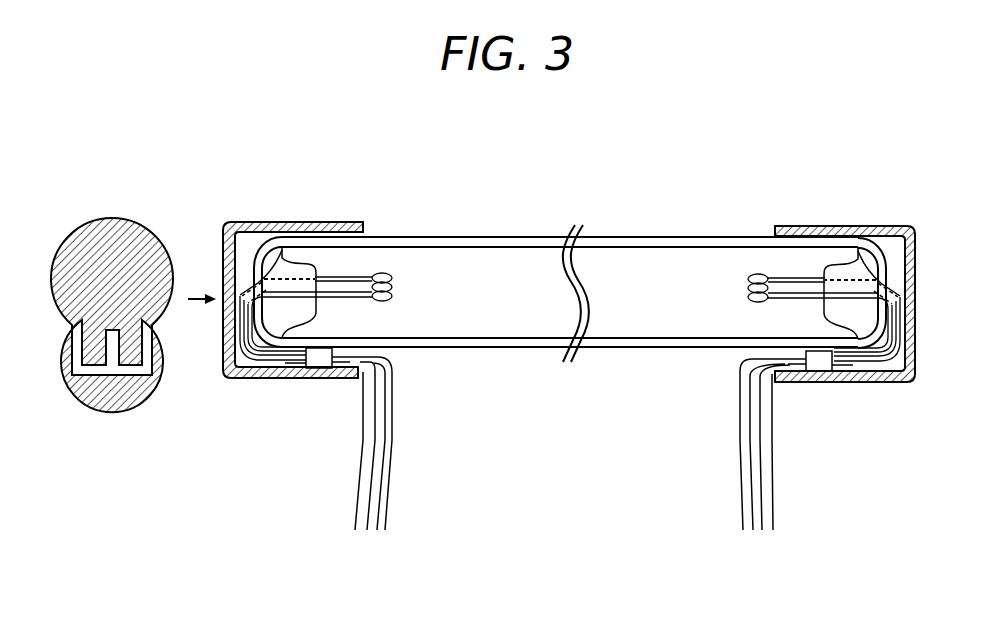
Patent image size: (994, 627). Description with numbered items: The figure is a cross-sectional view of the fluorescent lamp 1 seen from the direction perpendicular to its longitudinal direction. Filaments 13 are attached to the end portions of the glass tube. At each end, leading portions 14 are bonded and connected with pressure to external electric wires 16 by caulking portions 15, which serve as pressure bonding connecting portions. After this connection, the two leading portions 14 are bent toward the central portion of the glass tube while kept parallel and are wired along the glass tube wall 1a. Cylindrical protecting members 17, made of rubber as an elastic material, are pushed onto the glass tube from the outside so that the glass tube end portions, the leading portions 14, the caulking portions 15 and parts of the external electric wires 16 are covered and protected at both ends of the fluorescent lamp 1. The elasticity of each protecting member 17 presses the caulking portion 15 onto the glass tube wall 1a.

The fluorescent lamp 1 is at (638, 222).
The glass tube wall 1a is at (513, 348).
The filaments 13 is at (390, 272).
The leading portions 14 is at (254, 380).
The caulking portions 15 is at (317, 380).
The external electric wires 16 is at (388, 433).
The protecting members 17 is at (315, 223).